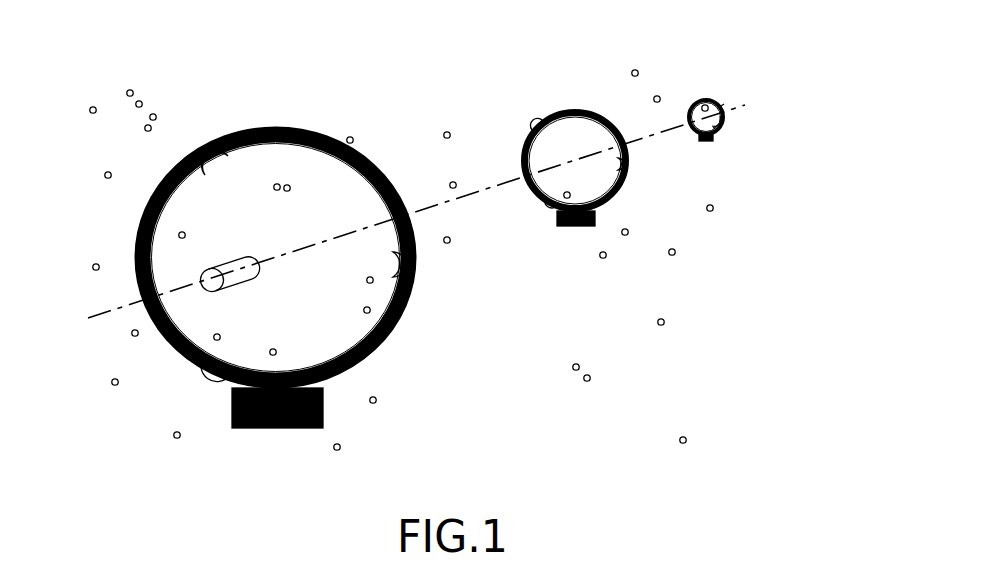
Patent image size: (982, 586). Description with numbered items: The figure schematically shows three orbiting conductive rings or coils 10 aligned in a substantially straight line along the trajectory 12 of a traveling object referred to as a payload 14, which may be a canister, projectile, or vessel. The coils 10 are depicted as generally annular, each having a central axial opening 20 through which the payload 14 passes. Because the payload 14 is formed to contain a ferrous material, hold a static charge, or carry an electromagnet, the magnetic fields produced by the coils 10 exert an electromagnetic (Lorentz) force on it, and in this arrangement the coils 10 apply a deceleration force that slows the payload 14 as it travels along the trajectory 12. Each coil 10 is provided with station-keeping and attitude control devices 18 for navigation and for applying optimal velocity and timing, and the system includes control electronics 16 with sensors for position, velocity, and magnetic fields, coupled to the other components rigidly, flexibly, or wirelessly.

The orbiting conductive coil 10 is at (295, 127).
The trajectory 12 is at (463, 197).
The payload 14 is at (227, 265).
The control electronics 16 is at (325, 415).
The station-keeping and attitude control devices 18 is at (215, 140).
The central opening 20 is at (295, 237).